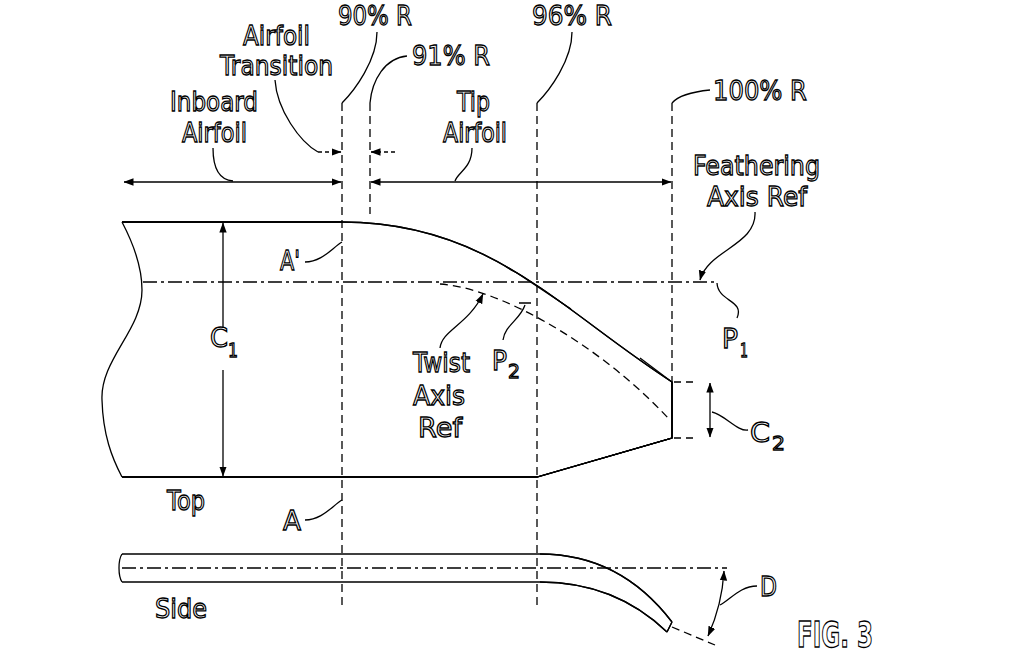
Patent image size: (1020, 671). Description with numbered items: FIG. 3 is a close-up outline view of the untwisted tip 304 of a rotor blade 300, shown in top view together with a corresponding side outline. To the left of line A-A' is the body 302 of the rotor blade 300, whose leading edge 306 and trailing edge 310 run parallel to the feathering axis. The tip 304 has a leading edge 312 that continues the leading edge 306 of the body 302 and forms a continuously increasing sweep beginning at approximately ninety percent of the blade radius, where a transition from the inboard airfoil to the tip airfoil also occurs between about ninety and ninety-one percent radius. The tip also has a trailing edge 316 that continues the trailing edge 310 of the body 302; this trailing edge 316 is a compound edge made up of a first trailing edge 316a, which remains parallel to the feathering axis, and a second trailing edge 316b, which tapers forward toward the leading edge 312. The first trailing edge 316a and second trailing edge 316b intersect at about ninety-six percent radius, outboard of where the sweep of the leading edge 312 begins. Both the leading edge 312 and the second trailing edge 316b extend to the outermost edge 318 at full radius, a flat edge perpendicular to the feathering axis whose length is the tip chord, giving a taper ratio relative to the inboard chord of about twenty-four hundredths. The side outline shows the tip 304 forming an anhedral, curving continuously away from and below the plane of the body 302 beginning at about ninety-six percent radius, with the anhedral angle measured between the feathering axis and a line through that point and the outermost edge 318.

The rotor blade 300 is at (624, 107).
The body 302 is at (155, 362).
The tip 304 is at (597, 433).
The leading edge 306 is at (155, 225).
The trailing edge 310 is at (155, 478).
The leading edge 312 is at (541, 283).
The trailing edge 316 is at (655, 445).
The first trailing edge 316a is at (431, 478).
The second trailing edge 316b is at (555, 472).
The outermost edge 318 is at (670, 420).